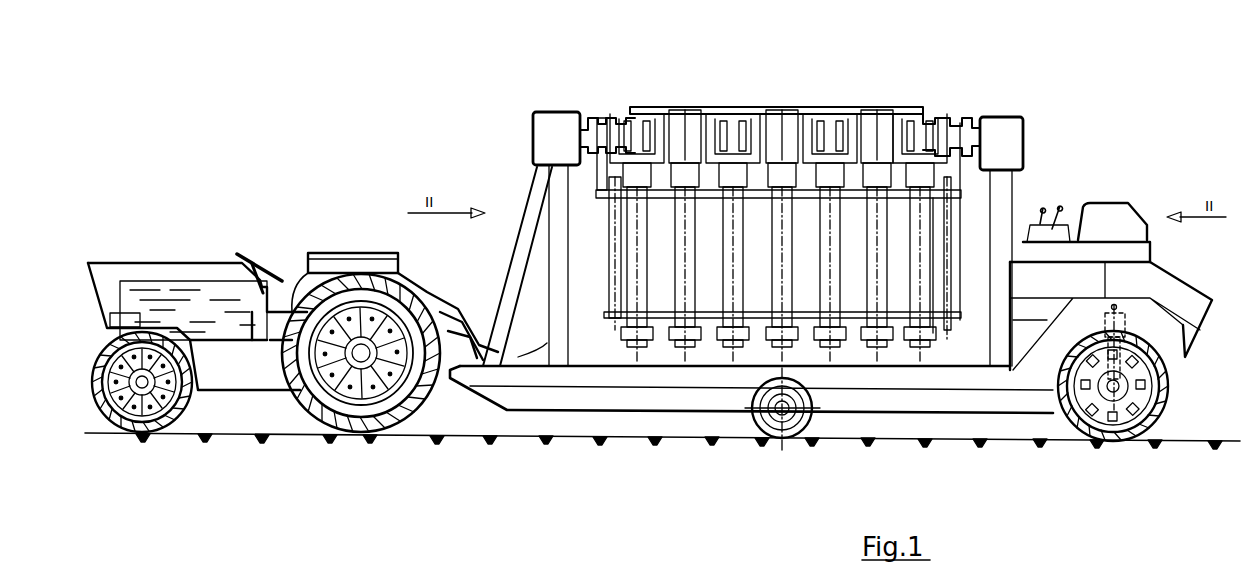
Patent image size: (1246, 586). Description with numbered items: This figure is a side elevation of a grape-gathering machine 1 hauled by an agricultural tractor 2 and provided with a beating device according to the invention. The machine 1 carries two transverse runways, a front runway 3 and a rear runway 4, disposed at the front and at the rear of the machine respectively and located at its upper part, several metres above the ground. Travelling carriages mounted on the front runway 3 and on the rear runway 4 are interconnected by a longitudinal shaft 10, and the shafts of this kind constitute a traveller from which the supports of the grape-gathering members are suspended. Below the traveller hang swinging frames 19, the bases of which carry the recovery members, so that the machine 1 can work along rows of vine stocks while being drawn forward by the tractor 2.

The grape-gathering machine 1 is at (784, 86).
The agricultural tractor 2 is at (231, 248).
The front transverse runway 3 is at (563, 150).
The rear transverse runway 4 is at (1008, 154).
The longitudinal shaft 10 is at (975, 116).
The swinging frame 19 is at (727, 269).